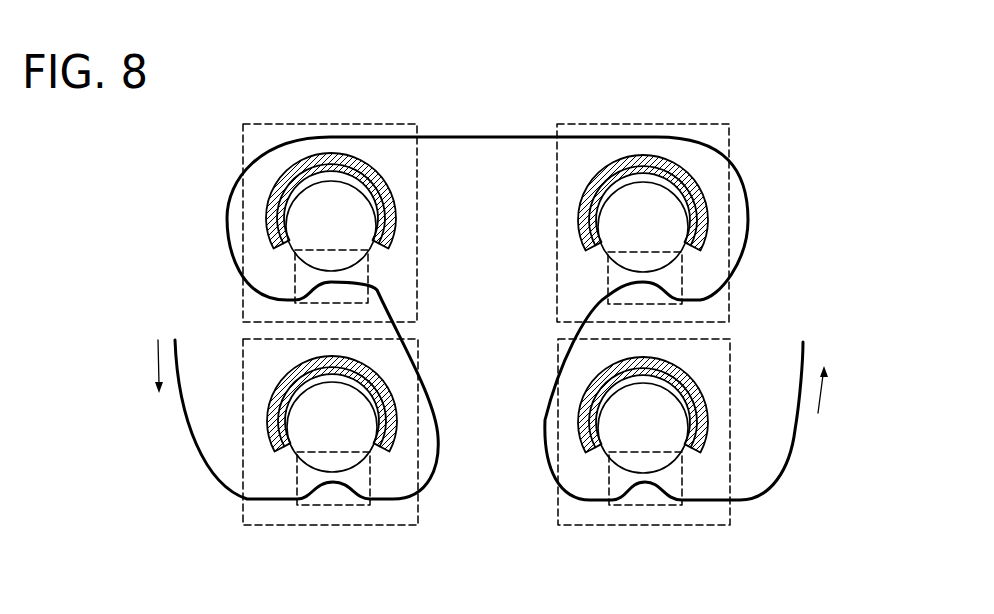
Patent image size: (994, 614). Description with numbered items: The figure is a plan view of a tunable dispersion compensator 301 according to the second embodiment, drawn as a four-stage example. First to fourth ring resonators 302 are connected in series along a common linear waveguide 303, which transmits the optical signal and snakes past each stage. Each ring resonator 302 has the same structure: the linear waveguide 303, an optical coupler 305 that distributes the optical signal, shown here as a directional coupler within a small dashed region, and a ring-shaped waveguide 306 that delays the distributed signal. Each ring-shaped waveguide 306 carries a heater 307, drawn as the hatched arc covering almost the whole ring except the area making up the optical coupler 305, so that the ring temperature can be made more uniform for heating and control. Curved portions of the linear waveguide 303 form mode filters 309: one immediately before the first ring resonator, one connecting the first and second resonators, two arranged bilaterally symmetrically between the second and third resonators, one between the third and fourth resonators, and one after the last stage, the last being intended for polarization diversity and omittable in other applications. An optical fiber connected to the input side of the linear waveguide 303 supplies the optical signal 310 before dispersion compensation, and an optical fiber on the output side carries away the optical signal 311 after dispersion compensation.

The tunable dispersion compensator 301 is at (742, 92).
The ring resonator 302 is at (758, 330).
The linear waveguide 303 is at (480, 137).
The optical coupler 305 is at (369, 282).
The ring-shaped waveguide 306 is at (292, 250).
The heater 307 is at (394, 200).
The mode filter 309 is at (817, 477).
The optical signal before dispersion compensation 310 is at (134, 366).
The optical signal after dispersion compensation 311 is at (844, 391).